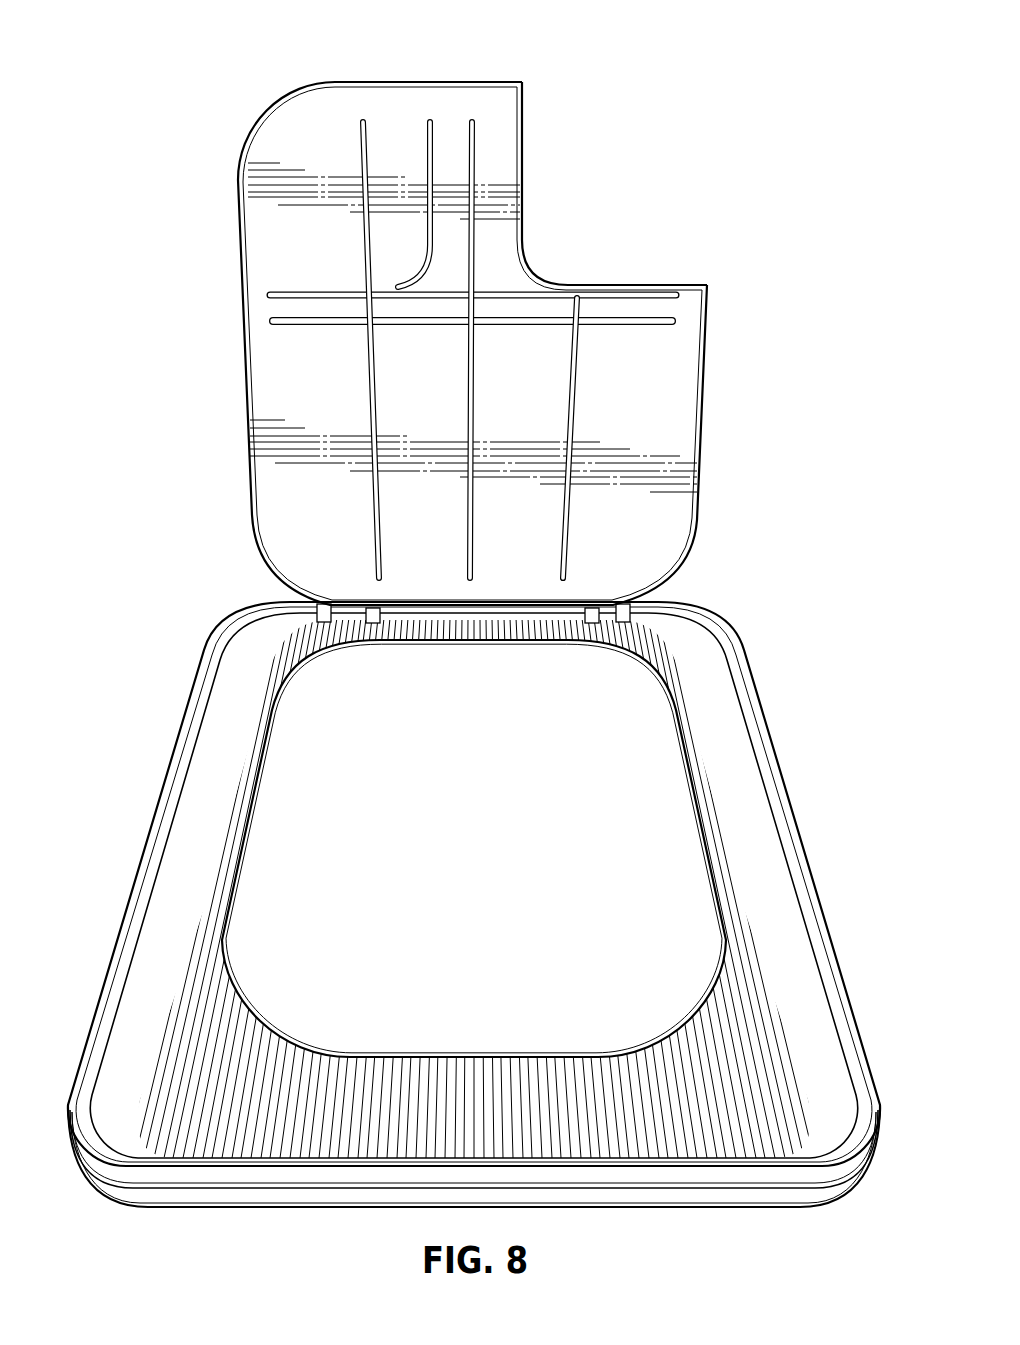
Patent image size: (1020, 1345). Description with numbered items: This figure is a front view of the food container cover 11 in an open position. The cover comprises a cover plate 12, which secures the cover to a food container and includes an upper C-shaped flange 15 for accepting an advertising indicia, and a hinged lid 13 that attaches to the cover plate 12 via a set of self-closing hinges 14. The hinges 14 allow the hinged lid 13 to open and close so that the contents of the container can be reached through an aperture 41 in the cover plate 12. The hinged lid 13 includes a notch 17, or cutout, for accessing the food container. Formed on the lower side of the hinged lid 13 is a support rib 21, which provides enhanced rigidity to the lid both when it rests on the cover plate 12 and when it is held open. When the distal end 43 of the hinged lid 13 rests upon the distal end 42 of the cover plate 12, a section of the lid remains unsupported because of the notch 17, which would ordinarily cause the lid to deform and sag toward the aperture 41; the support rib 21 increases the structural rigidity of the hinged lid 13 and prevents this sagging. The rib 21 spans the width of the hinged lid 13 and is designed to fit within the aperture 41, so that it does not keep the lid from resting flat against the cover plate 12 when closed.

The food container cover 11 is at (474, 904).
The cover plate 12 is at (178, 735).
The hinged lid 13 is at (507, 311).
The self-closing hinges 14 is at (360, 630).
The upper C-shaped flange 15 is at (838, 1040).
The notch 17 is at (534, 267).
The support rib 21 is at (328, 321).
The aperture 41 is at (478, 842).
The distal end of the cover plate 42 is at (550, 1058).
The distal end of the hinged lid 43 is at (390, 80).